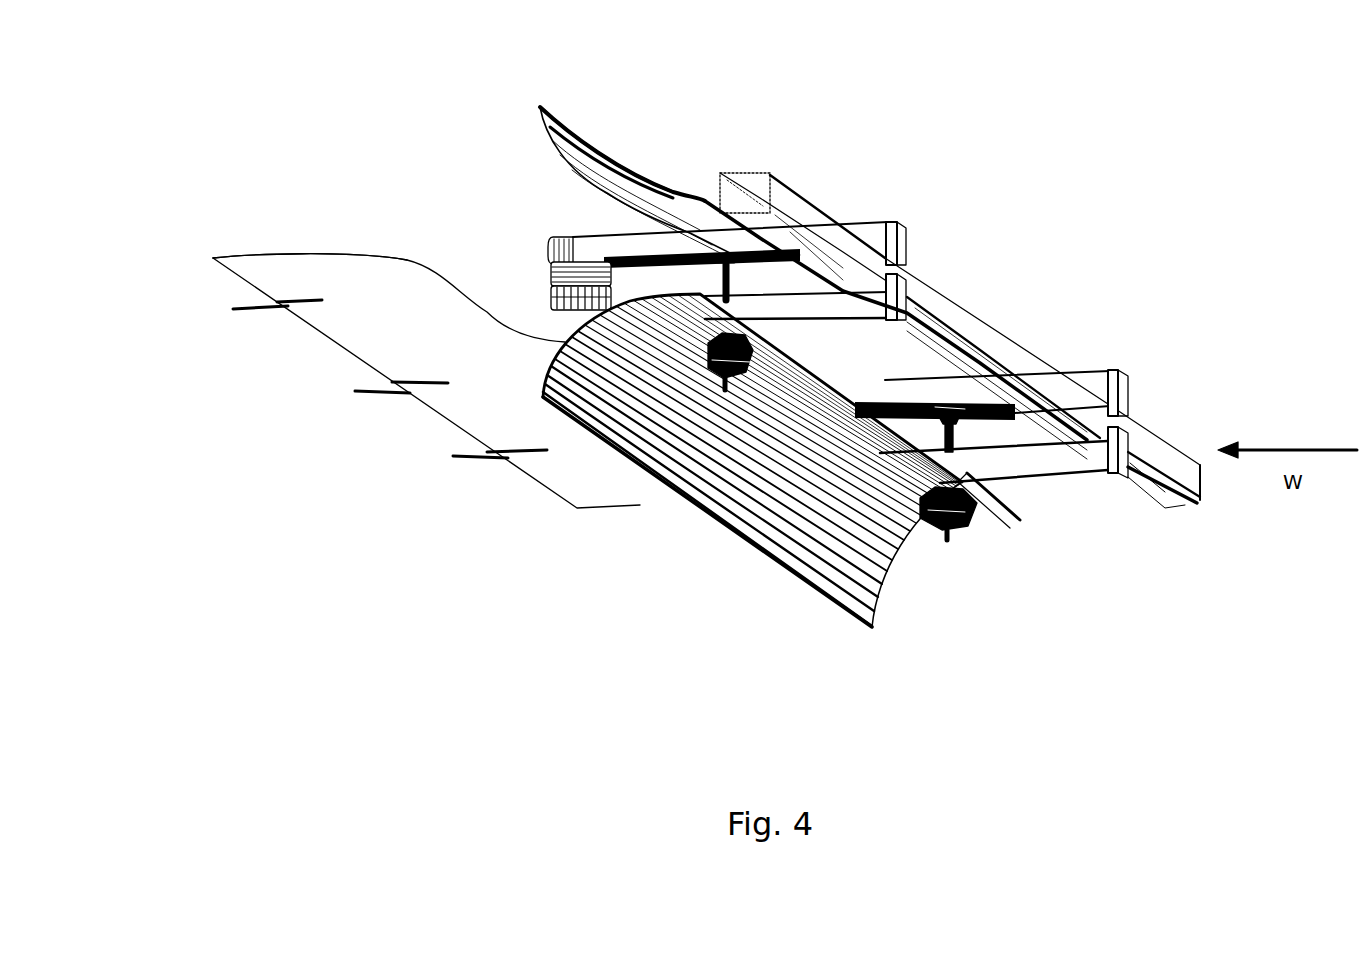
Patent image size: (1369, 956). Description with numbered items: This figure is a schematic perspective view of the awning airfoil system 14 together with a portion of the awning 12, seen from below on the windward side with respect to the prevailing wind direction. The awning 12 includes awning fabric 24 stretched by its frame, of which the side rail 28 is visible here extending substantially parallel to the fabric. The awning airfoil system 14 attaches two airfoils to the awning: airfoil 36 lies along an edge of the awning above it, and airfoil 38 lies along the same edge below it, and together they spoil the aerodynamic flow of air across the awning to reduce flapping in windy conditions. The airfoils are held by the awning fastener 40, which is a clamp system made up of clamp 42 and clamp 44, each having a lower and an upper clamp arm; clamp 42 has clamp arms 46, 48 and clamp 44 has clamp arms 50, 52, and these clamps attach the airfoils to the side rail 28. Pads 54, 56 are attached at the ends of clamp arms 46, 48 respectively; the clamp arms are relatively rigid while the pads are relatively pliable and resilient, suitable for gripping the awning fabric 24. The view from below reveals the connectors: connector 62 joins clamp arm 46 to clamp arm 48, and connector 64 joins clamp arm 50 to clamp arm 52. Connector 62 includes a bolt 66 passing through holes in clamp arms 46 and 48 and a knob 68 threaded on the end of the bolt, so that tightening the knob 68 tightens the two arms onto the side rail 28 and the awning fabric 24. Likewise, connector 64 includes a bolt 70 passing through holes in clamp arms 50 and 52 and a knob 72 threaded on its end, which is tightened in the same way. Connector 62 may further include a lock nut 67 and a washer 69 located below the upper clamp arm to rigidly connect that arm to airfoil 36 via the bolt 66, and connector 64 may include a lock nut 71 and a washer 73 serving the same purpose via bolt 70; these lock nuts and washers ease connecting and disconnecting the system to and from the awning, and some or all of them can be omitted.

The awning 12 is at (405, 250).
The awning airfoil system 14 is at (655, 178).
The awning fabric 24 is at (328, 288).
The side rail 28 is at (777, 195).
The airfoil 36 is at (580, 127).
The airfoil 38 is at (872, 600).
The awning fastener 40 is at (556, 232).
The clamp 42 is at (865, 212).
The clamp 44 is at (1091, 355).
The clamp arm 46 is at (903, 300).
The clamp arm 48 is at (898, 222).
The clamp arm 50 is at (1118, 452).
The clamp arm 52 is at (1120, 385).
The pad 54 is at (552, 288).
The pad 56 is at (553, 276).
The connector 62 is at (757, 347).
The connector 64 is at (990, 497).
The bolt 66 is at (734, 290).
The lock nut 67 is at (688, 252).
The knob 68 is at (752, 371).
The washer 69 is at (718, 258).
The bolt 70 is at (955, 434).
The lock nut 71 is at (925, 404).
The knob 72 is at (979, 513).
The washer 73 is at (942, 410).